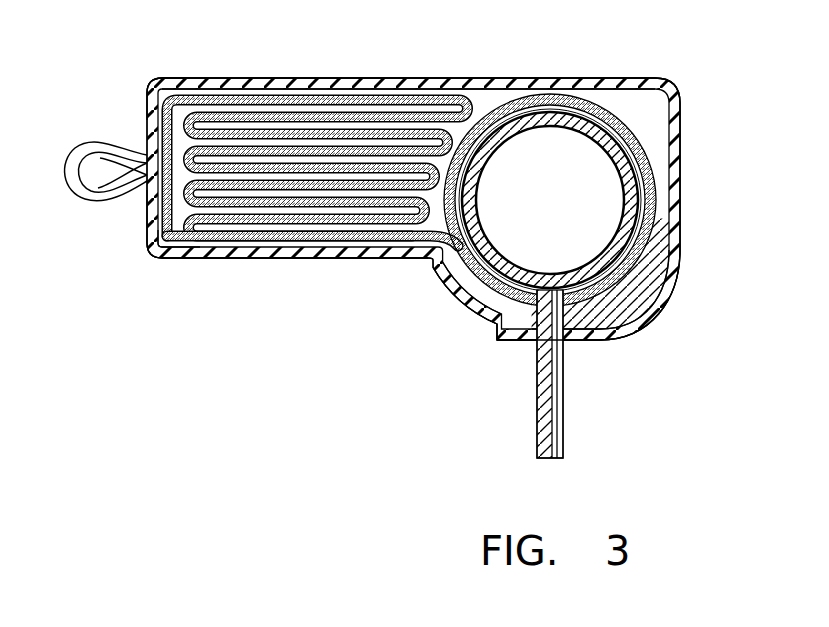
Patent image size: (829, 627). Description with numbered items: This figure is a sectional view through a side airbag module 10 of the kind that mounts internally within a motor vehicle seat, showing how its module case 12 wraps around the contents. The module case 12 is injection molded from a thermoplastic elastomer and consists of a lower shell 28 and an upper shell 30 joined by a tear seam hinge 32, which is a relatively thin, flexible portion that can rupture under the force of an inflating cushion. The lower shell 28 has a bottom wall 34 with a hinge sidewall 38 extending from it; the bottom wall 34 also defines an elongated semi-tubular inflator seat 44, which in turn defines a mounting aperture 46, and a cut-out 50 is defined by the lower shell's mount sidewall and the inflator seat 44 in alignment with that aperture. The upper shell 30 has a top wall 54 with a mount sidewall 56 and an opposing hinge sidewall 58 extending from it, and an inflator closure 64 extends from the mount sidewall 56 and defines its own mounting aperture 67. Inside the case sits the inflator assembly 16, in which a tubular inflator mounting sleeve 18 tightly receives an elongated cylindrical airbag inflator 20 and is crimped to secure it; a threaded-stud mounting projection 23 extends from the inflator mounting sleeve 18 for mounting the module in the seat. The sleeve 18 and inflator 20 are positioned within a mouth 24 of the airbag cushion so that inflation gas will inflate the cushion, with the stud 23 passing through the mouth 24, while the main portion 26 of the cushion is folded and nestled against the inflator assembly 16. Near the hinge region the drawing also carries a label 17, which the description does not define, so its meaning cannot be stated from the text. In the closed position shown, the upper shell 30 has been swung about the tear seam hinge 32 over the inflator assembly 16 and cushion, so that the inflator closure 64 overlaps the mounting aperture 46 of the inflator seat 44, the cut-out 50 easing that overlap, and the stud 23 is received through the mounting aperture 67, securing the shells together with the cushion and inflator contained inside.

The side airbag module 10 is at (294, 334).
The module case 12 is at (598, 78).
The inflator assembly 16 is at (475, 305).
The clip inner strip 17 is at (103, 186).
The inflator mounting sleeve 18 is at (450, 283).
The airbag inflator 20 is at (433, 268).
The mounting projection 23 is at (537, 430).
The mouth 24 is at (634, 270).
The main portion 26 is at (320, 97).
The lower shell 28 is at (185, 265).
The upper shell 30 is at (430, 76).
The tear seam hinge 32 is at (100, 160).
The bottom wall 34 is at (268, 258).
The hinge sidewall 38 is at (150, 237).
The inflator seat 44 is at (500, 332).
The mounting aperture 46 is at (540, 335).
The cut-out 50 is at (682, 228).
The top wall 54 is at (275, 78).
The mount sidewall 56 is at (682, 150).
The hinge sidewall 58 is at (152, 108).
The inflator closure 64 is at (613, 325).
The mounting aperture 67 is at (566, 340).